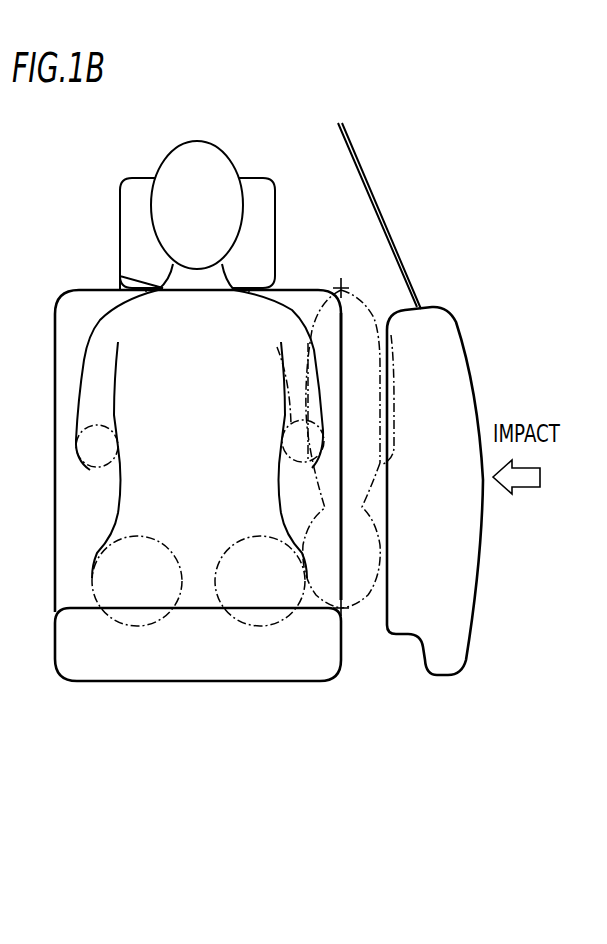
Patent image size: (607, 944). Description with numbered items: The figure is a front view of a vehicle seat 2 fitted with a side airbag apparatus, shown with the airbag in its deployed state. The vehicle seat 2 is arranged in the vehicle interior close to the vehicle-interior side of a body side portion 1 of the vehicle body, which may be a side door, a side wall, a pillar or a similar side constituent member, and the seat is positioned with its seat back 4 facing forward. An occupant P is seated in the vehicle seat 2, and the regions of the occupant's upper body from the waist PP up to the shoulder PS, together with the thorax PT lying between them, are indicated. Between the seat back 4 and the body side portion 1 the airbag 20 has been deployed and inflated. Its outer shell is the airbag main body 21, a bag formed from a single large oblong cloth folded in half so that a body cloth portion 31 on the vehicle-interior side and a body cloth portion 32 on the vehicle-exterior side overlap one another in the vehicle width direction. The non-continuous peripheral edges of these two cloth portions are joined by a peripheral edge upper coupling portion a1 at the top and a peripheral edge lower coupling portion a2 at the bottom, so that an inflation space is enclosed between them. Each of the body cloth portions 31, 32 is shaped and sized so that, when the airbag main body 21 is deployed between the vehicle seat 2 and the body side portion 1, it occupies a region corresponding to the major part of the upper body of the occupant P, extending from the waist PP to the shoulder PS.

The body side portion 1 is at (469, 403).
The vehicle seat 2 is at (55, 325).
The seat back 4 is at (339, 405).
The airbag 20 is at (360, 293).
The airbag main body 21 is at (378, 316).
The body cloth portion 31 is at (292, 378).
The body cloth portion 32 is at (396, 385).
The occupant P is at (202, 142).
The shoulder PS is at (122, 307).
The occupant thorax PT is at (223, 387).
The waist PP is at (116, 532).
The peripheral edge upper coupling portion a1 is at (339, 287).
The peripheral edge lower coupling portion a2 is at (343, 610).